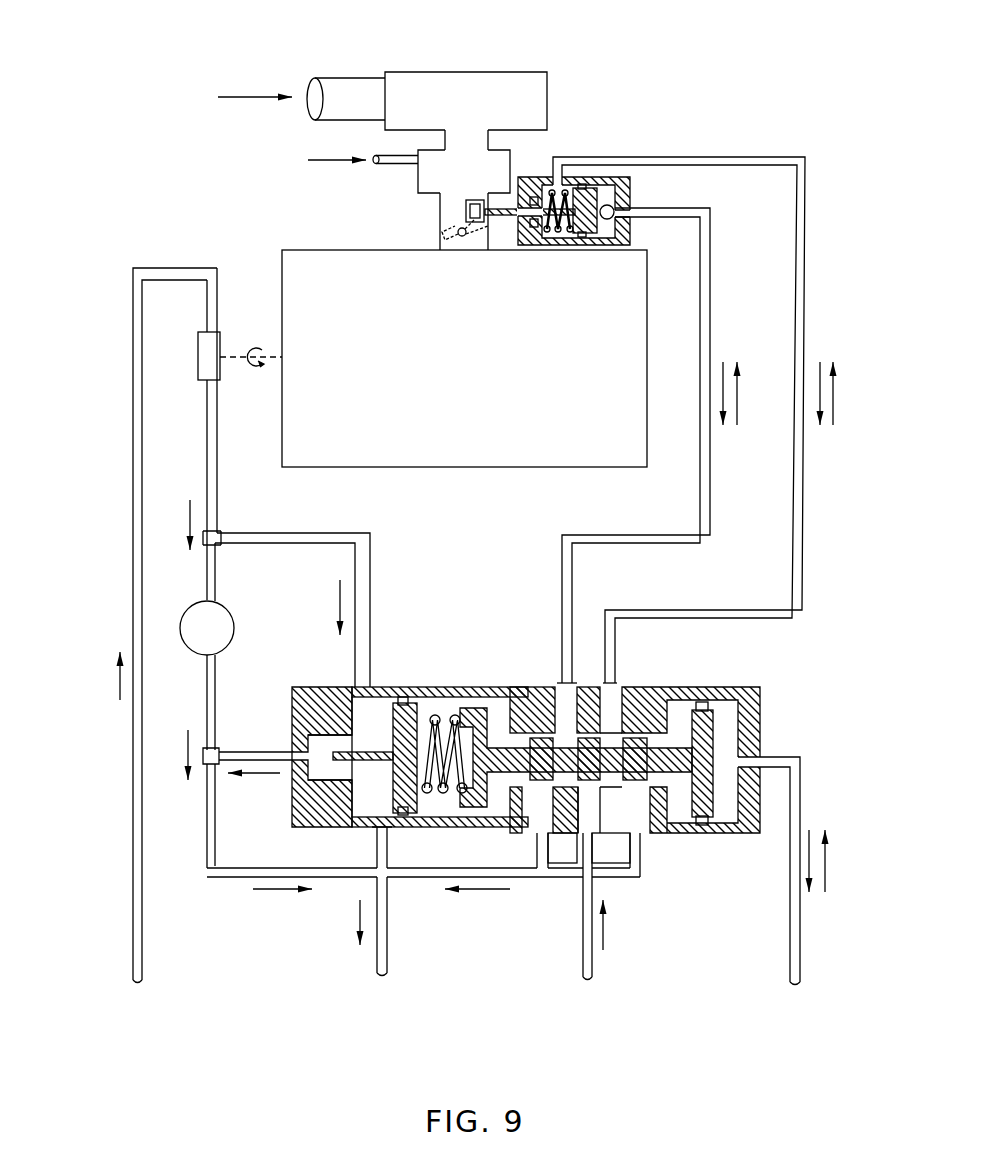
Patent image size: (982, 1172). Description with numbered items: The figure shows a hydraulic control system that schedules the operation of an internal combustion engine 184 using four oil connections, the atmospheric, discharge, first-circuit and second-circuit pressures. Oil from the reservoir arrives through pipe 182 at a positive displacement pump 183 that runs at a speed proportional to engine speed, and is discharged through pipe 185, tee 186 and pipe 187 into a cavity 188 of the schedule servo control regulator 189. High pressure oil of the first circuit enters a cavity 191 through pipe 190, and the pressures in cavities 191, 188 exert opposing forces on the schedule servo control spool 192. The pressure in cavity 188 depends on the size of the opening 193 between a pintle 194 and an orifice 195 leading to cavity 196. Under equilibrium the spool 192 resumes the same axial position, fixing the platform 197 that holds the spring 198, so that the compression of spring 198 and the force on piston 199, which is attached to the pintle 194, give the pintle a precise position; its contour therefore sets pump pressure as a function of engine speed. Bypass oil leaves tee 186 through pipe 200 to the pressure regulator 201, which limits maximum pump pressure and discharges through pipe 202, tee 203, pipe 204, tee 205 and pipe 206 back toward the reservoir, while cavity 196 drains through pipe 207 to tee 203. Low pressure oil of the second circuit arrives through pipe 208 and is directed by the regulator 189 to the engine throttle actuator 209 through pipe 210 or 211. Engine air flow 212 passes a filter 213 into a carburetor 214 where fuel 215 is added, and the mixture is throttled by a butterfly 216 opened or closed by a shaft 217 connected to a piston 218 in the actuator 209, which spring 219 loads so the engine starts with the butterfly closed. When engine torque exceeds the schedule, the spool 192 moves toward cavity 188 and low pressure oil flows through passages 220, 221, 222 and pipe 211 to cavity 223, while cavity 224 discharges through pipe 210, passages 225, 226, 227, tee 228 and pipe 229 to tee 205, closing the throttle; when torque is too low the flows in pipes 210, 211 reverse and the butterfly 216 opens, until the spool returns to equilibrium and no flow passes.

The pipe 182 is at (132, 775).
The positive displacement pump 183 is at (198, 345).
The engine 184 is at (310, 250).
The pipe 185 is at (207, 425).
The tee 186 is at (221, 533).
The pipe 187 is at (320, 535).
The cavity 188 is at (372, 712).
The schedule servo control regulator 189 is at (400, 705).
The pipe 190 is at (803, 795).
The cavity 191 is at (735, 730).
The schedule servo control spool 192 is at (688, 832).
The opening 193 is at (352, 700).
The pintle 194 is at (295, 798).
The orifice 195 is at (326, 828).
The cavity 196 is at (302, 740).
The platform 197 is at (508, 697).
The spring 198 is at (407, 700).
The piston 199 is at (400, 830).
The pipe 200 is at (216, 570).
The pressure regulator 201 is at (232, 622).
The pipe 202 is at (207, 672).
The tee 203 is at (207, 766).
The pipe 204 is at (207, 880).
The tee 205 is at (378, 868).
The pipe 206 is at (390, 962).
The pipe 207 is at (292, 752).
The pipe 208 is at (600, 965).
The engine throttle actuator 209 is at (530, 180).
The pipe 210 is at (635, 545).
The pipe 211 is at (803, 560).
The engine air flow 212 is at (237, 95).
The filter 213 is at (547, 85).
The carburetor 214 is at (418, 180).
The fuel 215 is at (330, 162).
The butterfly 216 is at (450, 222).
The shaft 217 is at (505, 243).
The piston 218 is at (592, 245).
The spring 219 is at (560, 245).
The passage 220 is at (640, 855).
The passage 221 is at (630, 840).
The passage 222 is at (612, 700).
The cavity 223 is at (548, 245).
The cavity 224 is at (618, 196).
The passage 225 is at (565, 695).
The passage 226 is at (590, 868).
The passage 227 is at (537, 828).
The tee 228 is at (525, 878).
The pipe 229 is at (390, 905).